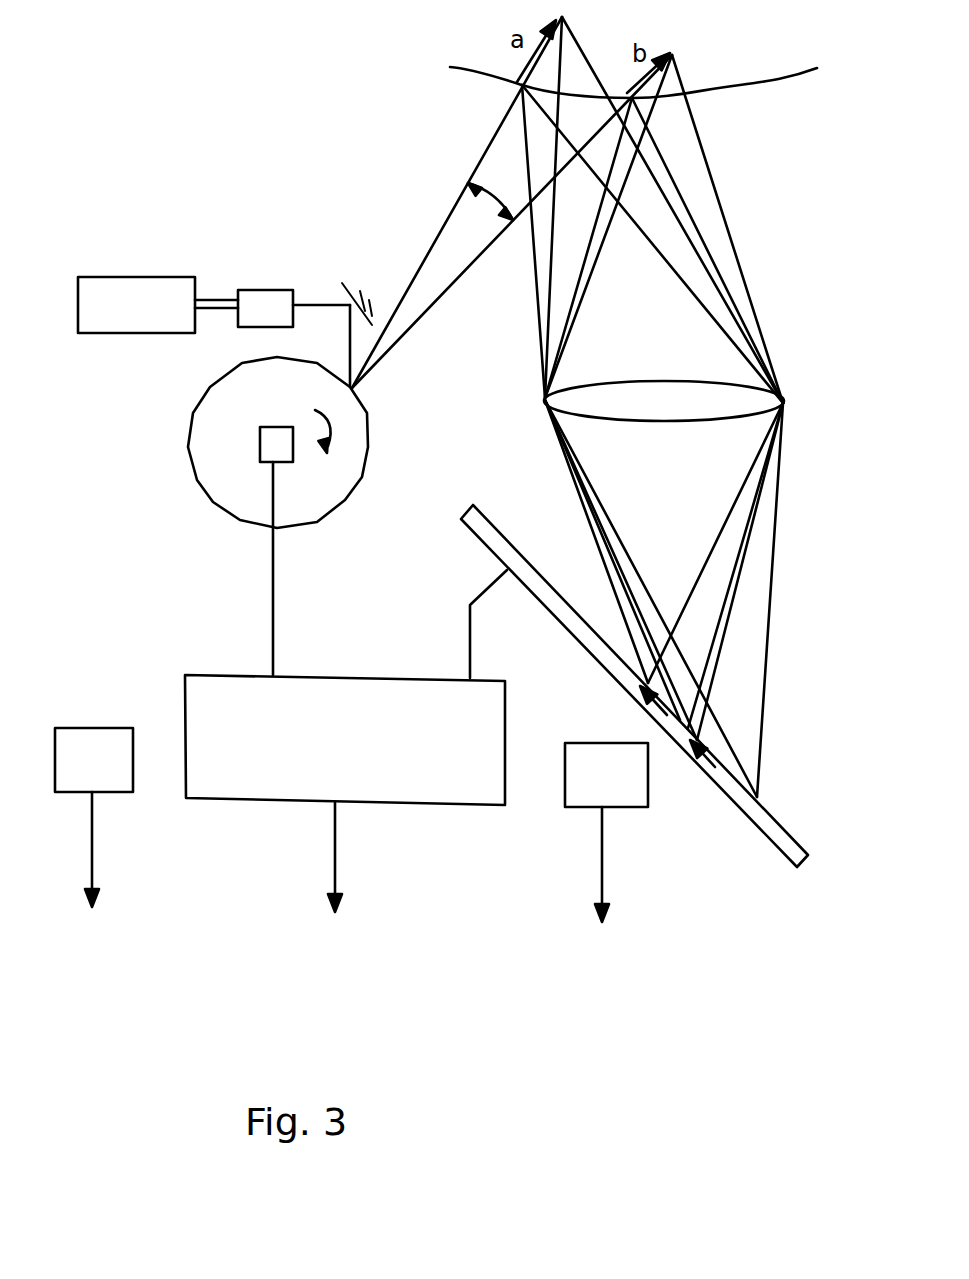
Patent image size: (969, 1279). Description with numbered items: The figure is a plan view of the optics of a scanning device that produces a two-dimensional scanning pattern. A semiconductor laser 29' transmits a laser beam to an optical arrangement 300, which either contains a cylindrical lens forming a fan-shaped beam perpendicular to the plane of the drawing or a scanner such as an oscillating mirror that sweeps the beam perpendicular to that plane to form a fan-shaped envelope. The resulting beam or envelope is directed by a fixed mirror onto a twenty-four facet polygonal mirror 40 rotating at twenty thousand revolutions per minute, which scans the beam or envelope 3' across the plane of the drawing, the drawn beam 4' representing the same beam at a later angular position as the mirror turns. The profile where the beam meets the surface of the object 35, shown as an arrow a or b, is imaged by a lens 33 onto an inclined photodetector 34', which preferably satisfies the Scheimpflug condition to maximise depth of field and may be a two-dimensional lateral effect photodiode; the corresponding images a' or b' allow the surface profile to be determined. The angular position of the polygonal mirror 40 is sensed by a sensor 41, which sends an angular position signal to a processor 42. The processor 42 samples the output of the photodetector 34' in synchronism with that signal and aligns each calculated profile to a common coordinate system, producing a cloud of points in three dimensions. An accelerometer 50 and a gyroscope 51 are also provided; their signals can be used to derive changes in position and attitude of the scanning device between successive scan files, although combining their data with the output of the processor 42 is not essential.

The beam or envelope 3' is at (457, 202).
The scanning light beam (second position) 4' is at (567, 229).
The semiconductor laser 29' is at (136, 330).
The optical arrangement 300 is at (263, 289).
The lens 33 is at (692, 423).
The inclined photodetector 34' is at (652, 723).
The object surface 35 is at (778, 82).
The polygonal mirror 40 is at (350, 492).
The sensor 41 is at (258, 445).
The processor 42 is at (405, 803).
The accelerometer 50 is at (117, 793).
The gyroscope 51 is at (572, 807).